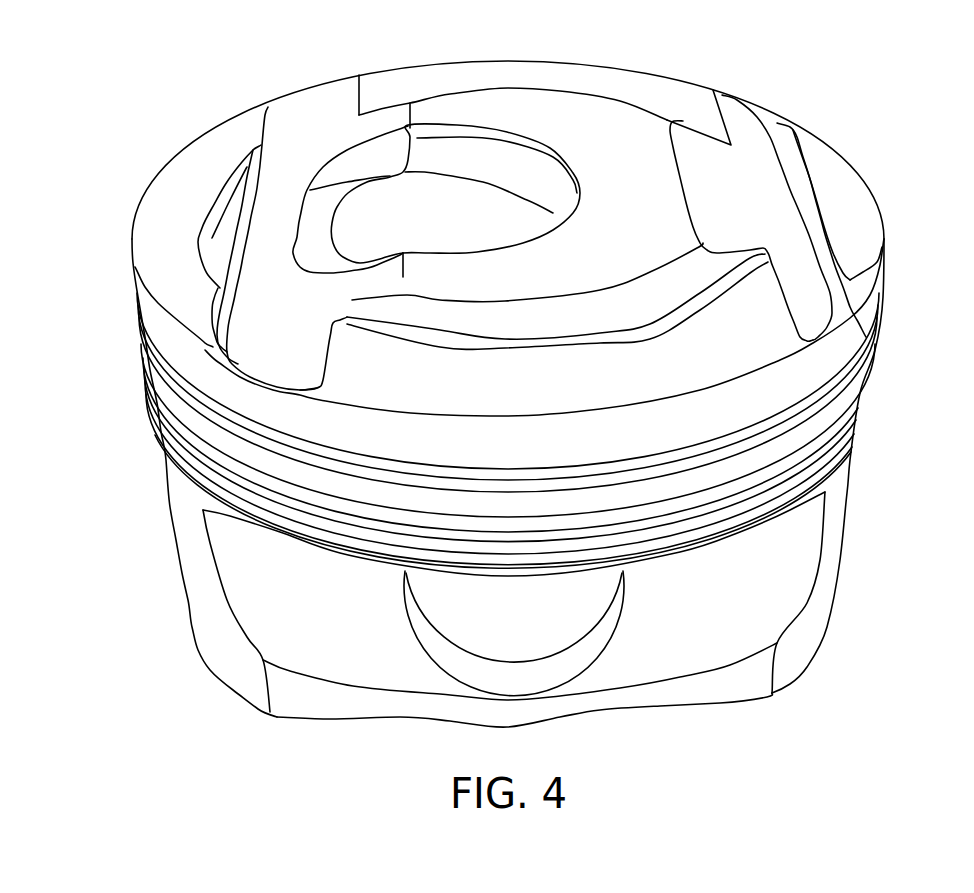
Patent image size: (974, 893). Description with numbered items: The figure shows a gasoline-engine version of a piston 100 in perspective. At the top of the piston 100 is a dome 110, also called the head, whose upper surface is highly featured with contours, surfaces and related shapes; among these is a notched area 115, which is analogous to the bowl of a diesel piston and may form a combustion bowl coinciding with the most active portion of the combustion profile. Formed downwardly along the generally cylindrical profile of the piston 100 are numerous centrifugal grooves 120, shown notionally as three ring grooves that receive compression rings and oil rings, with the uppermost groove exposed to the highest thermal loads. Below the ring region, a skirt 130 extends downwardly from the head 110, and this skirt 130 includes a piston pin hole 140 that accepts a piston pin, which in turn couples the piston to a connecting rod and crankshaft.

The piston 100 is at (176, 97).
The dome 110 is at (567, 72).
The notched area 115 is at (474, 227).
The centrifugal grooves 120 is at (878, 320).
The skirt 130 is at (860, 413).
The piston pin hole 140 is at (448, 622).